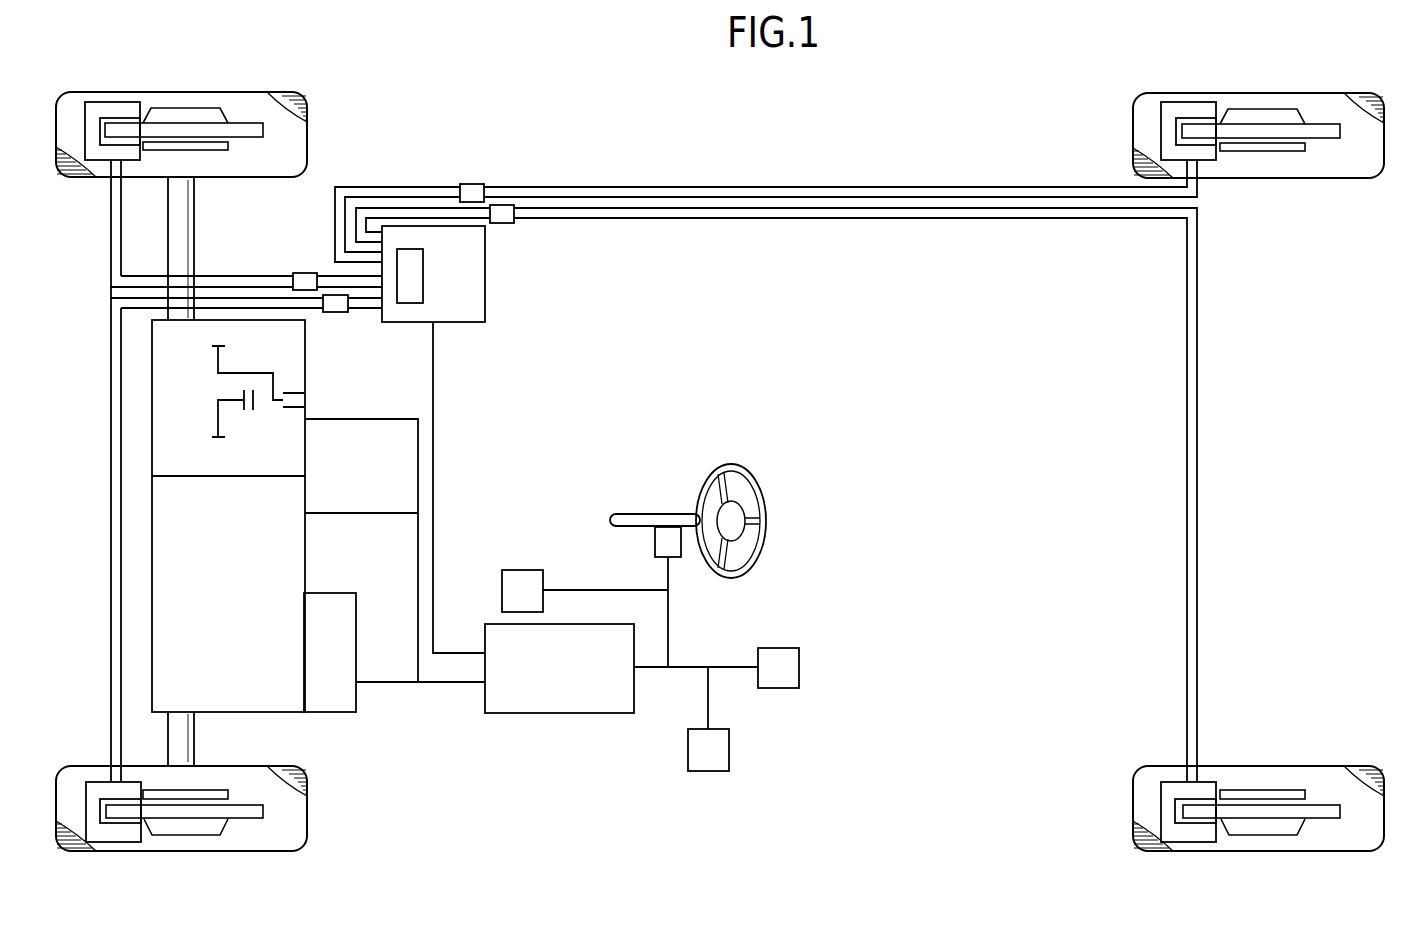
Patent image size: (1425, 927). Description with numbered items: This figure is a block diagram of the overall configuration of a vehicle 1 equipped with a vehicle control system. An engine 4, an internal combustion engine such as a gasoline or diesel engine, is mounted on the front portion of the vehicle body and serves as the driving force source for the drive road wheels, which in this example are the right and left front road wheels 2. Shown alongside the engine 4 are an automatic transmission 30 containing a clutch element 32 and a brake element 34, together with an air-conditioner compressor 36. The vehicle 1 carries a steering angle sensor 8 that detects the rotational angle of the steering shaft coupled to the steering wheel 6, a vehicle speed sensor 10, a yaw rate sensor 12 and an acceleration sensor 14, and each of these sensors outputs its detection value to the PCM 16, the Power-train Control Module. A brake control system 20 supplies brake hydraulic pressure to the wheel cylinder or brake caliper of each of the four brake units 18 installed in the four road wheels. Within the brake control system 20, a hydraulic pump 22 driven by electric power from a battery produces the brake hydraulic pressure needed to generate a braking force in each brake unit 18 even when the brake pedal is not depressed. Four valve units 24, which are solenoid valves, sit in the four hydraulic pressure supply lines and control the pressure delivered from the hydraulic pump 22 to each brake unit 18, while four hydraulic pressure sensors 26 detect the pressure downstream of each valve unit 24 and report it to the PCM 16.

The vehicle 1 is at (1370, 628).
The front road wheel 2 is at (258, 92).
The engine 4 is at (305, 537).
The steering wheel 6 is at (731, 465).
The steering angle sensor 8 is at (655, 548).
The vehicle speed sensor 10 is at (527, 570).
The yaw rate sensor 12 is at (790, 648).
The acceleration sensor 14 is at (714, 772).
The PCM 16 is at (620, 713).
The brake unit 18 is at (118, 101).
The brake control system 20 is at (485, 287).
The hydraulic pump 22 is at (423, 283).
The valve unit 24 is at (466, 184).
The hydraulic pressure sensor 26 is at (340, 295).
The automatic transmission 30 is at (305, 357).
The clutch element 32 is at (243, 410).
The brake element 34 is at (297, 410).
The air-conditioner compressor 36 is at (322, 712).